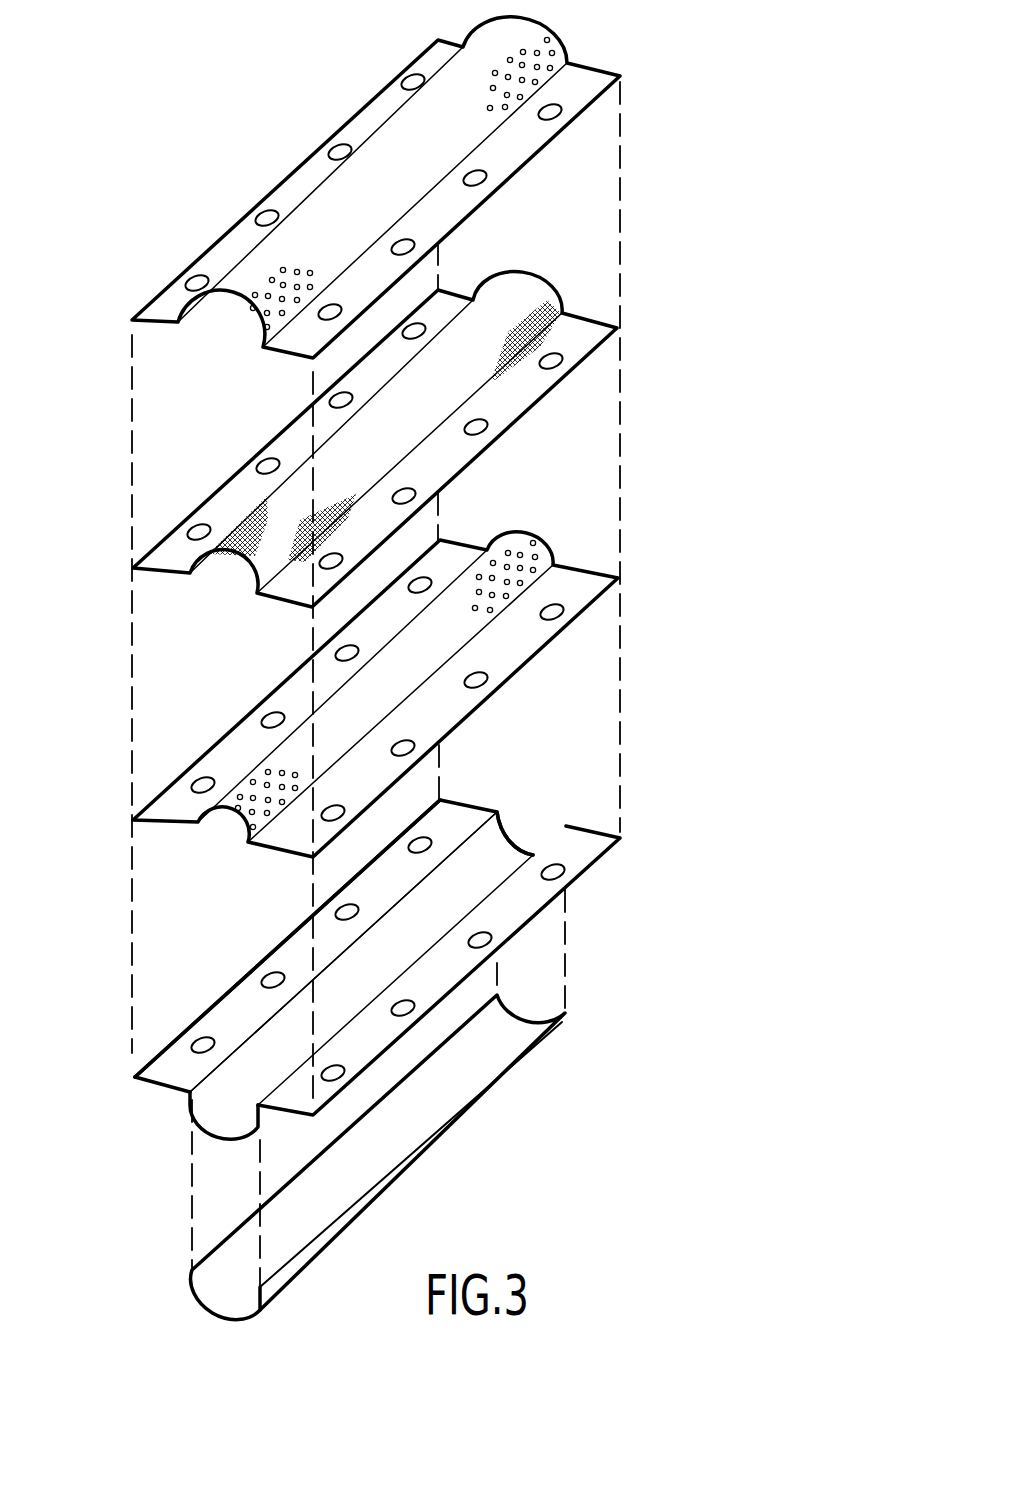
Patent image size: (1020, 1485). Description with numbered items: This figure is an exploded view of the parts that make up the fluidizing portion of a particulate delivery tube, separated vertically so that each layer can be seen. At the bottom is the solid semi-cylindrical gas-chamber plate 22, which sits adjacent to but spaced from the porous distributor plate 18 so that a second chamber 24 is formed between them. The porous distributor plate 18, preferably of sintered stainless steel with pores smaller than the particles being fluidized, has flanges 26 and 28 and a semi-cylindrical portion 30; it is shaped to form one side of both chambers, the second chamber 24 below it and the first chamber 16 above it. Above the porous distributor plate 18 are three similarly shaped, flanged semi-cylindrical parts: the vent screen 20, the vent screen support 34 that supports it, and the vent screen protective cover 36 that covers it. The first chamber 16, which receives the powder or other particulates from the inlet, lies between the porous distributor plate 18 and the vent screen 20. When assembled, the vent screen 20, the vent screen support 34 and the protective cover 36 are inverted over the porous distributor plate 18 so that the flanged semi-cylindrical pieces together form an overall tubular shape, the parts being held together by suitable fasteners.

The first chamber 16 is at (371, 949).
The porous distributor plate 18 is at (203, 1125).
The vent screen 20 is at (168, 537).
The gas-chamber plate 22 is at (503, 1087).
The second chamber 24 is at (367, 1157).
The flange 26 is at (210, 1013).
The flange 28 is at (588, 872).
The semi-cylindrical portion 30 is at (532, 855).
The vent screen support 34 is at (603, 598).
The vent screen protective cover 36 is at (587, 68).